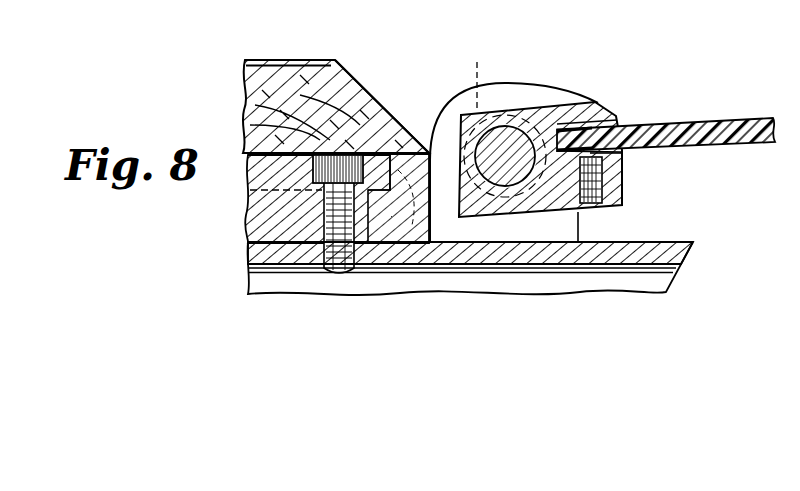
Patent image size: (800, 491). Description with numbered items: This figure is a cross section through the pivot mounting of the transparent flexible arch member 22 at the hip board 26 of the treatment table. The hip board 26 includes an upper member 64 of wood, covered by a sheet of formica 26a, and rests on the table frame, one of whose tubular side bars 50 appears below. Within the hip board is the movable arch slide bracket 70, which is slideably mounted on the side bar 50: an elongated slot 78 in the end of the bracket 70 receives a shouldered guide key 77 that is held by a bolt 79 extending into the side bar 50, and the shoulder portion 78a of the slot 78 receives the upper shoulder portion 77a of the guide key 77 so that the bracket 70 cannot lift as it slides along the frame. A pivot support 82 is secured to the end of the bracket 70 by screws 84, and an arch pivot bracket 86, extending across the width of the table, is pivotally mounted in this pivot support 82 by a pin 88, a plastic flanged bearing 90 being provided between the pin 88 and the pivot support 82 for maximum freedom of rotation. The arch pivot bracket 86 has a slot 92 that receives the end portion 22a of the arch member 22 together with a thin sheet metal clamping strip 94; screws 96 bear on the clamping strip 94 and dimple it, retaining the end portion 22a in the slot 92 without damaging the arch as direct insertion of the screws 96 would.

The arch member 22 is at (730, 118).
The end portion of the arch member 22a is at (562, 138).
The hip board portion 26 is at (275, 60).
The sheet of formica 26a is at (306, 62).
The tubular side bar 50 is at (648, 287).
The upper member of the hip board 64 is at (247, 110).
The movable arch slide bracket 70 is at (400, 222).
The shouldered guide key 77 is at (250, 225).
The upper shoulder portion of the guide key 77a is at (398, 203).
The elongated slot 78 is at (354, 189).
The shoulder portion of the slot 78a is at (378, 195).
The bolt 79 is at (340, 153).
The pivot support 82 is at (453, 97).
The screw 84 is at (388, 252).
The arch pivot bracket 86 is at (603, 108).
The pin 88 is at (507, 135).
The plastic flanged bearing 90 is at (475, 76).
The slot 92 is at (577, 128).
The clamping strip 94 is at (618, 156).
The screw 96 is at (600, 205).